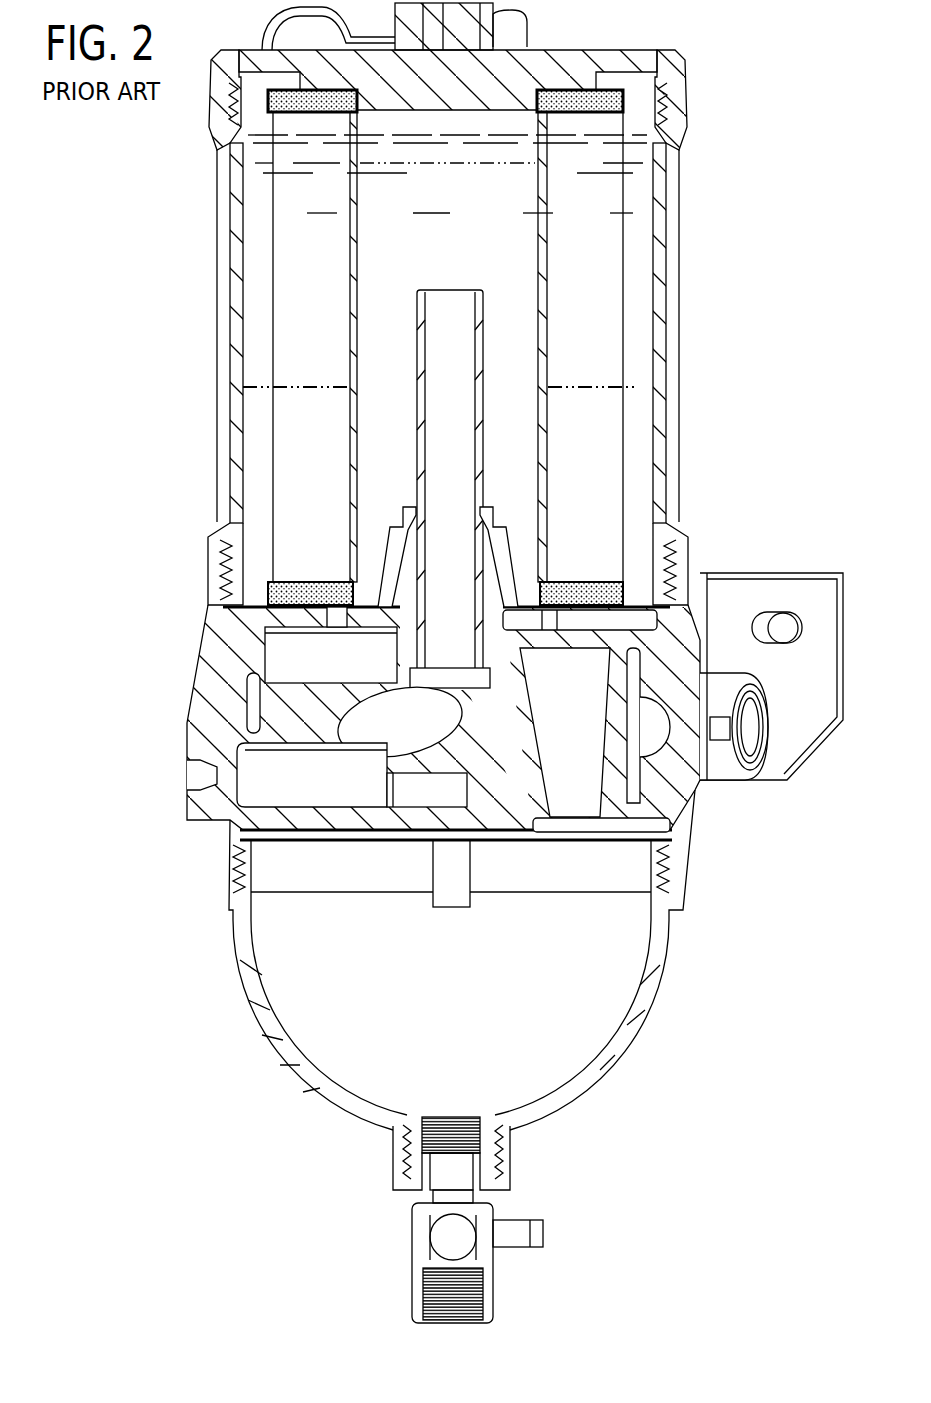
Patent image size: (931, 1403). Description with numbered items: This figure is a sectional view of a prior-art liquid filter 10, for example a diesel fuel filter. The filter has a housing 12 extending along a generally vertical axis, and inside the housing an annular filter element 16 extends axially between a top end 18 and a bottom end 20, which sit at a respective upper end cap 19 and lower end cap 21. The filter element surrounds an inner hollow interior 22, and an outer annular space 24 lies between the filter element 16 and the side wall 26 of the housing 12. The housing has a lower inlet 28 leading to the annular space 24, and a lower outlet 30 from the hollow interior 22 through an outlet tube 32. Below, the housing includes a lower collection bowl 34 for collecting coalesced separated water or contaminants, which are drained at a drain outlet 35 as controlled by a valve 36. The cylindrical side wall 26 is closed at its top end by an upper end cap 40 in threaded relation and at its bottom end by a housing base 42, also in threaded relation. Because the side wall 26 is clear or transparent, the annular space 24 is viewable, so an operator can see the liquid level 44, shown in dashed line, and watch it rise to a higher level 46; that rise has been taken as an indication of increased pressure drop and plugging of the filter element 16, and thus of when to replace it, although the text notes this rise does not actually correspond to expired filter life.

The liquid filter 10 is at (118, 218).
The housing 12 is at (210, 297).
The annular filter element 16 is at (612, 298).
The top end 18 is at (603, 82).
The upper end cap 19 is at (663, 97).
The bottom end 20 is at (592, 583).
The lower end cap 21 is at (633, 590).
The inner hollow interior 22 is at (464, 250).
The outer annular space 24 is at (640, 218).
The side wall 26 is at (656, 248).
The lower inlet 28 is at (757, 740).
The lower outlet 30 is at (356, 722).
The outlet tube 32 is at (420, 391).
The lower collection bowl 34 is at (535, 1082).
The drain outlet 35 is at (485, 1310).
The valve 36 is at (512, 1225).
The upper end cap 40 is at (596, 52).
The housing base 42 is at (213, 655).
The liquid level 44 is at (640, 388).
The liquid level 46 is at (630, 124).